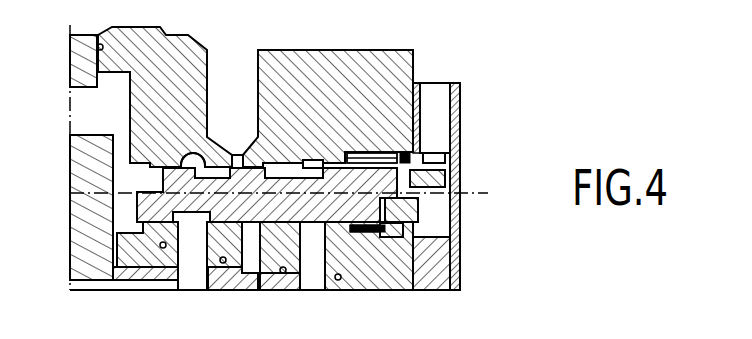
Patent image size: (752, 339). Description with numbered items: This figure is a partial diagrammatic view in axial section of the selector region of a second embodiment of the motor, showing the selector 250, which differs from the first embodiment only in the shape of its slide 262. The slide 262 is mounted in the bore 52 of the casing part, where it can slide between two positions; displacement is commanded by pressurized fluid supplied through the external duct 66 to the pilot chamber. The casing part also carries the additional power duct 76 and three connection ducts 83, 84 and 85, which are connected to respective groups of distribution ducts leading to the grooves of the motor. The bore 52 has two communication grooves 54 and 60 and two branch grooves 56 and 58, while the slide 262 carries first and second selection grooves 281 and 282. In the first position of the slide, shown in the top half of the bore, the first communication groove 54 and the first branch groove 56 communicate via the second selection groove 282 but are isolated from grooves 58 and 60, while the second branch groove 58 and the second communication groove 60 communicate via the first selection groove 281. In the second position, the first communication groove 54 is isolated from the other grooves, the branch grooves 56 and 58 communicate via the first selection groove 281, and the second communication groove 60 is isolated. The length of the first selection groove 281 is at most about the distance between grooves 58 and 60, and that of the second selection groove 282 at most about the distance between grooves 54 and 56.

The bore 52 is at (145, 180).
The first communication groove 54 is at (187, 163).
The first branch groove 56 is at (235, 163).
The second branch groove 58 is at (288, 160).
The second communication groove 60 is at (336, 163).
The external duct 66 is at (432, 100).
The additional power duct 76 is at (225, 63).
The connection duct 83 is at (193, 243).
The connection duct 84 is at (255, 257).
The connection duct 85 is at (318, 262).
The selector 250 is at (470, 133).
The slide 262 is at (425, 183).
The first selection groove 281 is at (372, 160).
The second selection groove 282 is at (140, 195).